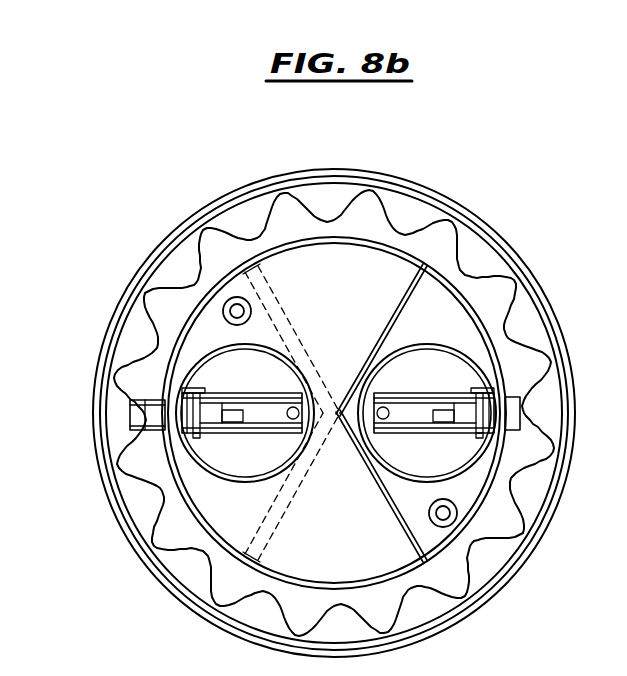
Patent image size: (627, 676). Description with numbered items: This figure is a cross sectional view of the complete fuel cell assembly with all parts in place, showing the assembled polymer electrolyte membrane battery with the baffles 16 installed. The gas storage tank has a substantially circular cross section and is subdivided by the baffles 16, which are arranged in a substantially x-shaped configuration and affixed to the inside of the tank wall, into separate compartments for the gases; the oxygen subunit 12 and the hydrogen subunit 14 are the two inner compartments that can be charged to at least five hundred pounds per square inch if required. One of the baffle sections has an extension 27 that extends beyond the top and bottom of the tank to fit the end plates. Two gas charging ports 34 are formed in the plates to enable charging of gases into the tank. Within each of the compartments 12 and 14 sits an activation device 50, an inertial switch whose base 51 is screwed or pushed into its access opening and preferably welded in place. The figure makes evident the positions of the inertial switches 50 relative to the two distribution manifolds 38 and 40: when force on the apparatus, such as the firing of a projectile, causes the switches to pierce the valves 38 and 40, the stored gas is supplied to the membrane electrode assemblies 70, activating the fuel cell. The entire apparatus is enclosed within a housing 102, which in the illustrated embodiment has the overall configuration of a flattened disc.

The oxygen subunit 12 is at (468, 485).
The hydrogen subunit 14 is at (240, 511).
The baffles 16 is at (273, 294).
The baffle extension 27 is at (428, 262).
The gas charging port 34 is at (237, 297).
The distribution manifold 38 is at (523, 402).
The distribution manifold 40 is at (143, 412).
The activation device 50 is at (240, 430).
The base 51 is at (213, 347).
The membrane electrode assemblies 70 is at (468, 246).
The housing 102 is at (505, 593).